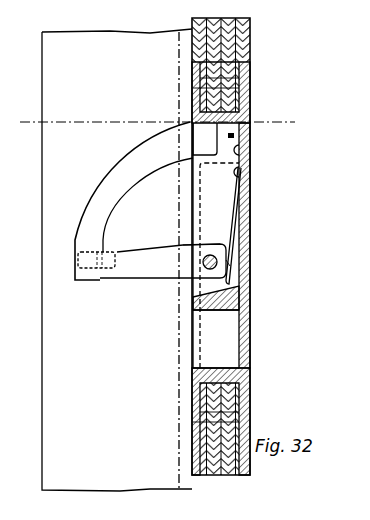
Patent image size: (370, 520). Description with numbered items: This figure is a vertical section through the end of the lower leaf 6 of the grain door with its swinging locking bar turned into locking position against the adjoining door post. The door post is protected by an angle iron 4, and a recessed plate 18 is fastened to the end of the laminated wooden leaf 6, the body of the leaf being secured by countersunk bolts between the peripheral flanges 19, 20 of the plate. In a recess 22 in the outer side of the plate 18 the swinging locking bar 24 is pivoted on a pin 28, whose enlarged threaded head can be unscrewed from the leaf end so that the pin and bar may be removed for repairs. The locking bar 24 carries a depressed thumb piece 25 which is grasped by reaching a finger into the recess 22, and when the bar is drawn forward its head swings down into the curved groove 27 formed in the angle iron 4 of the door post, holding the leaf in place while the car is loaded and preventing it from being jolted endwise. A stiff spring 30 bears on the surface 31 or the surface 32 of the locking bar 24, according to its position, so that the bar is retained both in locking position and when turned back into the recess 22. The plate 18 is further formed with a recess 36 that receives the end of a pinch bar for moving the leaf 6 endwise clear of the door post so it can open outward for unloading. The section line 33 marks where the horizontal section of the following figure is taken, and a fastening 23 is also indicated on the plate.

The angle iron 4 is at (117, 260).
The lower leaf 6 is at (222, 47).
The recessed plate 18 is at (252, 323).
The peripheral flange 19 is at (199, 88).
The peripheral flange 20 is at (247, 100).
The recess 22 is at (216, 245).
The screw 23 is at (234, 136).
The swinging locking bar 24 is at (147, 268).
The depressed thumb piece 25 is at (78, 276).
The curved groove 27 is at (120, 178).
The pin 28 is at (218, 261).
The stiff spring 30 is at (236, 222).
The surface 31 is at (232, 263).
The surface 32 is at (212, 246).
The section line 33 is at (20, 78).
The recess 36 is at (216, 339).